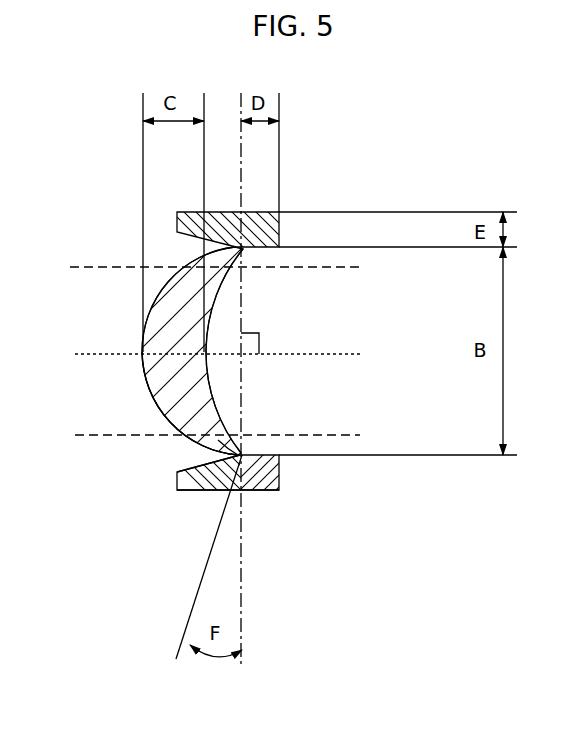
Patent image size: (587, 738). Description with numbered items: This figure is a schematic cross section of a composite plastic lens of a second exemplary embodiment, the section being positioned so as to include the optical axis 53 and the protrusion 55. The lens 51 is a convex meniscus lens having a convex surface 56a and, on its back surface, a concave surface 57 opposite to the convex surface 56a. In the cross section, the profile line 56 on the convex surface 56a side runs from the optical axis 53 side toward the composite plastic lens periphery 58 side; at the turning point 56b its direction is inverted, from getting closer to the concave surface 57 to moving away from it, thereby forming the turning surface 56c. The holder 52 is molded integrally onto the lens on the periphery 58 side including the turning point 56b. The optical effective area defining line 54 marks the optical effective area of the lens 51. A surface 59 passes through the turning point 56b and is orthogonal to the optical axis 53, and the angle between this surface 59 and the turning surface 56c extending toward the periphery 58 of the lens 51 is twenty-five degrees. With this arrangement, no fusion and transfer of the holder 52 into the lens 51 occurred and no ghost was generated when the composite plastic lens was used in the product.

The lens 51 is at (168, 305).
The holder 52 is at (180, 226).
The optical axis 53 is at (92, 354).
The optical effective area defining line 54 is at (128, 437).
The protrusion 55 is at (270, 473).
The profile line 56 is at (145, 365).
The convex surface 56a is at (152, 400).
The turning point 56b is at (243, 452).
The turning surface 56c is at (232, 474).
The concave surface 57 is at (195, 383).
The composite plastic lens periphery 58 is at (252, 491).
The surface passing through the turning point and orthogonal to the optical axis 59 is at (242, 193).